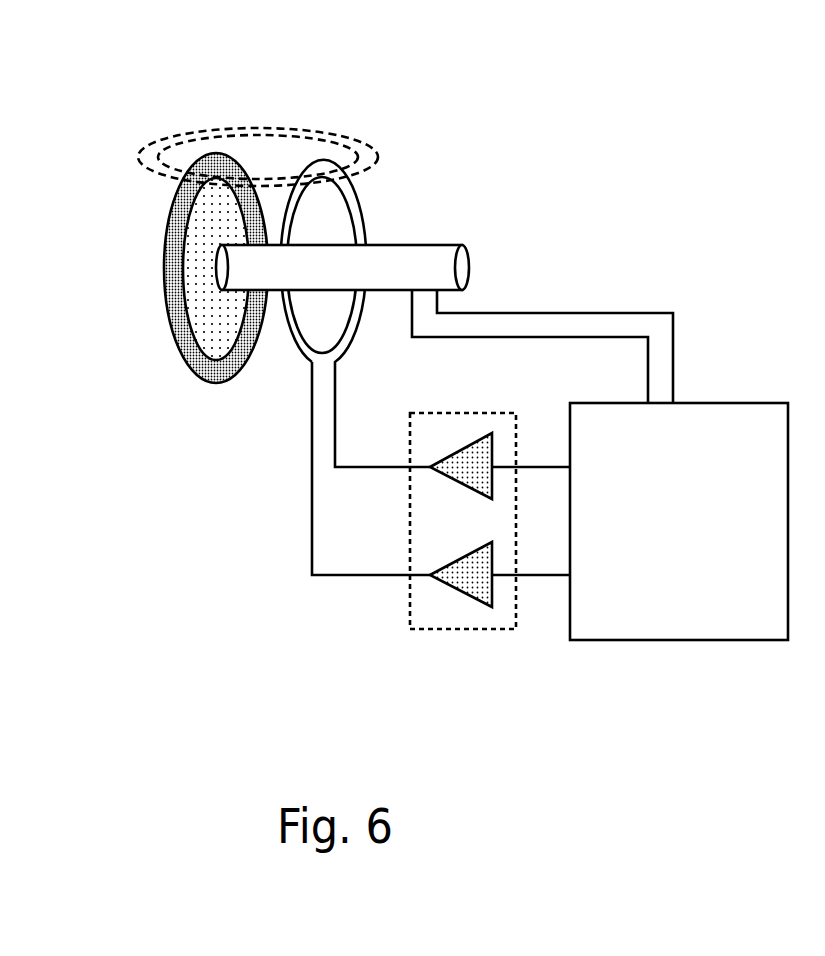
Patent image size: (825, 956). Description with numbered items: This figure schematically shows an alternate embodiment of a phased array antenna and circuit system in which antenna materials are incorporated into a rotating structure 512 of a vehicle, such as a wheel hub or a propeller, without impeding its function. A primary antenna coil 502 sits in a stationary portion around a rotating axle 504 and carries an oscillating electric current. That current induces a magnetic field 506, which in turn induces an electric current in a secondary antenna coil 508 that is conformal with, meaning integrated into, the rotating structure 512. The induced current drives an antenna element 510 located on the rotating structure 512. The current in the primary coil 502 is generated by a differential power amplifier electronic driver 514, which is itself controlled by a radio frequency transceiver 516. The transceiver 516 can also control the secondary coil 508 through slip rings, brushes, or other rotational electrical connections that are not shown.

The primary antenna coil 502 is at (362, 212).
The rotating axle 504 is at (470, 265).
The magnetic field 506 is at (280, 127).
The secondary antenna coil 508 is at (165, 244).
The antenna element 510 is at (208, 310).
The rotating structure 512 is at (216, 410).
The differential power amplifier electronic driver 514 is at (408, 597).
The radio frequency transceiver 516 is at (663, 640).